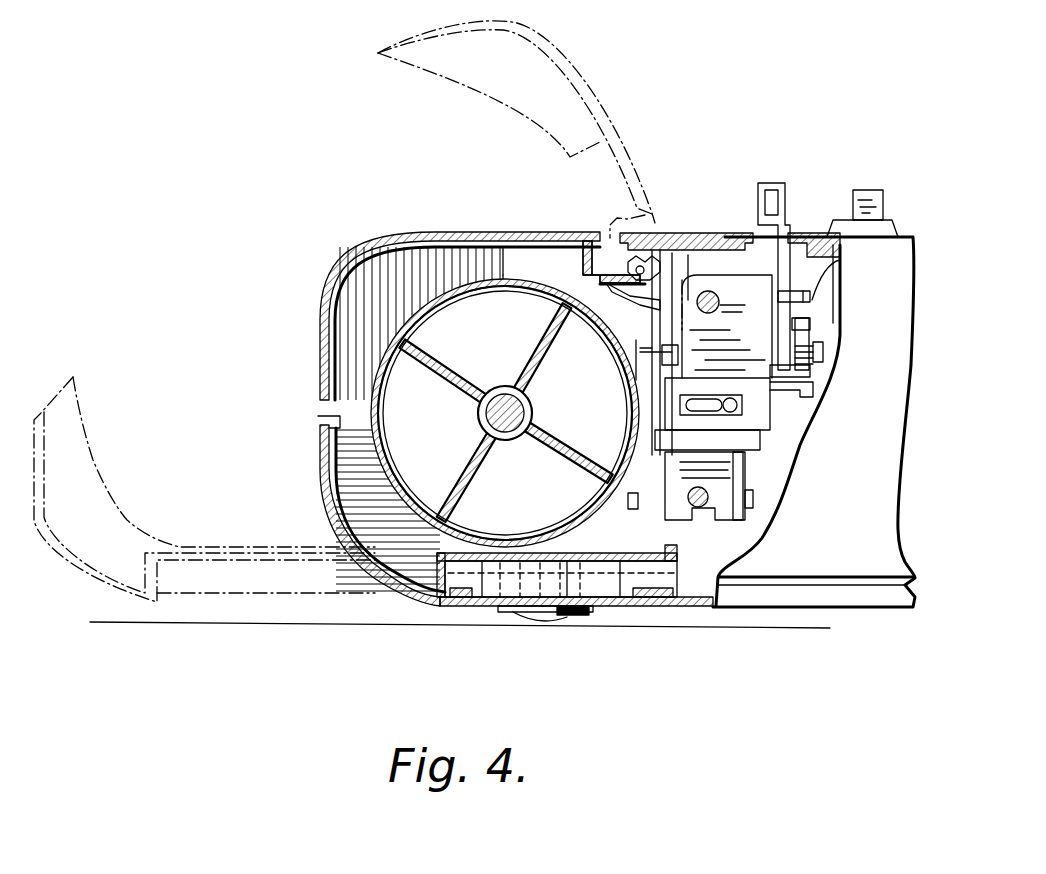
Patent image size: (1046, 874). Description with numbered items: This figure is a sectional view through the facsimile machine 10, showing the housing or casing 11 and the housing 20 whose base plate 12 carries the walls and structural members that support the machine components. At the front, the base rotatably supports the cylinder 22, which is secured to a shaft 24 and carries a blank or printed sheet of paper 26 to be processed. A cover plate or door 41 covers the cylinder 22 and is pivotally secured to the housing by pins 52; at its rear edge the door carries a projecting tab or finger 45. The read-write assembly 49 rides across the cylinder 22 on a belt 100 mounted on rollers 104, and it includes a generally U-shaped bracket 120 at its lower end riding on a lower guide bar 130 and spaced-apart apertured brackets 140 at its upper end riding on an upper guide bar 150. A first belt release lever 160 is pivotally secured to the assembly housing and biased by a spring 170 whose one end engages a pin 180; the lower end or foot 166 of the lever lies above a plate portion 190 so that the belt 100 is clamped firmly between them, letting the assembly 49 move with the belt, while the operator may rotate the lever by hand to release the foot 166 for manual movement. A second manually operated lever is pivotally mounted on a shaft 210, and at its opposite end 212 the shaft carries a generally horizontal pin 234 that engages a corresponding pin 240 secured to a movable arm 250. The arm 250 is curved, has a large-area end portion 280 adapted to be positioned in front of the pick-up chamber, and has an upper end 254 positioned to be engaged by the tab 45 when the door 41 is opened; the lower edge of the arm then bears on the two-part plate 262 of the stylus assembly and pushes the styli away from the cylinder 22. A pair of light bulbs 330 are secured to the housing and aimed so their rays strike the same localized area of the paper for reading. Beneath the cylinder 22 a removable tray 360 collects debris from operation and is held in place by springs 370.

The facsimile machine 10 is at (238, 264).
The housing or casing 11 is at (890, 427).
The base plate 12 is at (703, 610).
The housing 20 is at (693, 236).
The rotatable cylinder 22 is at (322, 440).
The shaft 24 is at (497, 410).
The document sheet 26 is at (383, 352).
The cover plate or door 41 is at (577, 60).
The projecting tab or finger 45 is at (660, 272).
The read-write assembly 49 is at (773, 455).
The pins 52 is at (640, 264).
The belt 100 is at (812, 322).
The rollers 104 is at (812, 338).
The U-shaped bracket 120 is at (738, 520).
The lower guide bar 130 is at (704, 512).
The apertured brackets 140 is at (722, 300).
The upper guide bar 150 is at (727, 326).
The first belt release lever 160 is at (790, 206).
The lower end or foot of the lever 166 is at (840, 382).
The spring 170 is at (807, 318).
The pin 180 is at (800, 300).
The plate portion 190 is at (810, 403).
The shaft 210 is at (824, 355).
The opposite end of the shaft 212 is at (660, 350).
The horizontal pin 234 is at (691, 356).
The pin 240 is at (630, 356).
The movable arm 250 is at (662, 322).
The upper end of the arm 254 is at (690, 278).
The two-part plate 262 is at (638, 510).
The large-area end portion 280 is at (668, 437).
The light bulbs 330 is at (735, 413).
The removable tray 360 is at (83, 572).
The springs 370 is at (492, 600).